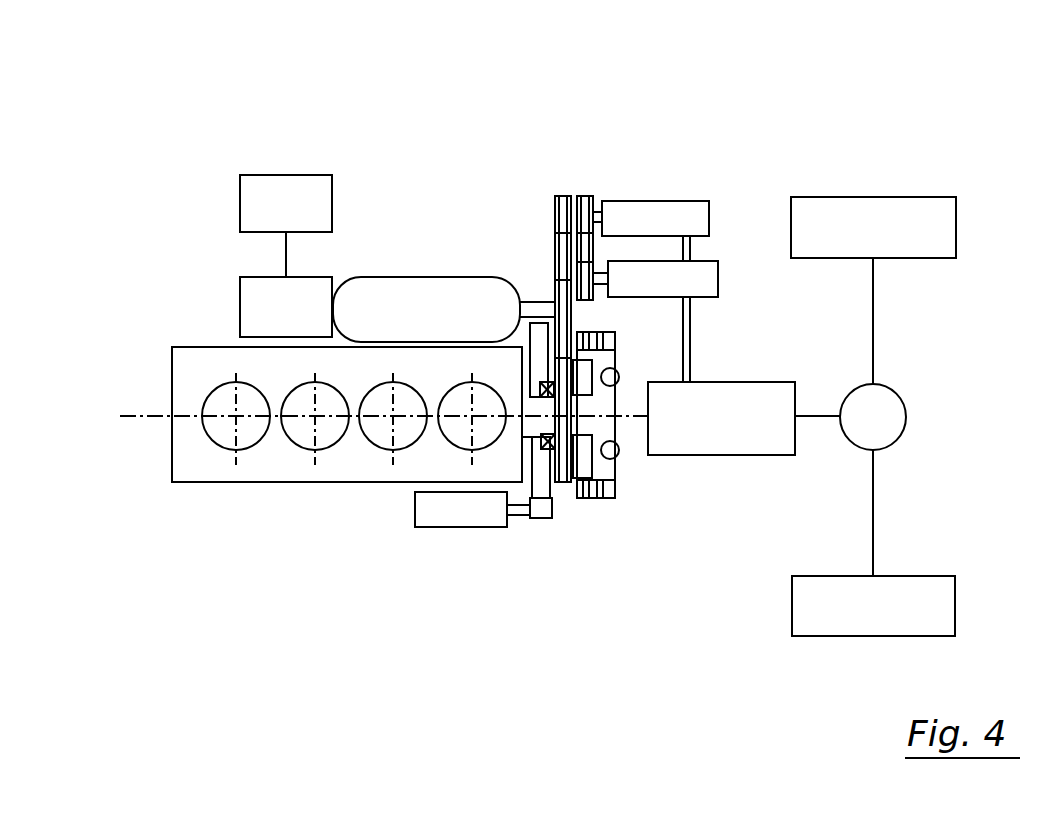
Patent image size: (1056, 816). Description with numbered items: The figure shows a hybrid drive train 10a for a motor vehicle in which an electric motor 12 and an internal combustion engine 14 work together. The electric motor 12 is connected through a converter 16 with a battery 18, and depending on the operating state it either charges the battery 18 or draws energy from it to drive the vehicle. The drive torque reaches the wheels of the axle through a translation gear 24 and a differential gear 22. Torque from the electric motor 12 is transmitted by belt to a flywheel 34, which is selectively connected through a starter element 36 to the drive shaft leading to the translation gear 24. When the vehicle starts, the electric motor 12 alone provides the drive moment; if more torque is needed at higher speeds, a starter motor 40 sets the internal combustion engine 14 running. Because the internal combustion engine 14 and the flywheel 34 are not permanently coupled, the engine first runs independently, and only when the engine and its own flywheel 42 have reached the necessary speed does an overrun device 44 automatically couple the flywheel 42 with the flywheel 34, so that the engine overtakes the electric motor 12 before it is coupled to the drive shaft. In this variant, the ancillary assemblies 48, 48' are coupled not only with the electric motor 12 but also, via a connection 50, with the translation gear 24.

The drive train 10a is at (804, 95).
The electric motor 12 is at (446, 321).
The internal combustion engine 14 is at (304, 484).
The converter 16 is at (300, 321).
The battery 18 is at (300, 219).
The differential gear 22 is at (886, 430).
The translation gear 24 is at (741, 432).
The flywheel 34 is at (582, 375).
The starter element 36 is at (592, 467).
The starter motor 40 is at (462, 528).
The flywheel 42 is at (511, 374).
The overrun device 44 is at (548, 442).
The ancillary assembly 48 is at (643, 248).
The ancillary assembly 48' is at (655, 279).
The connection 50 is at (689, 307).